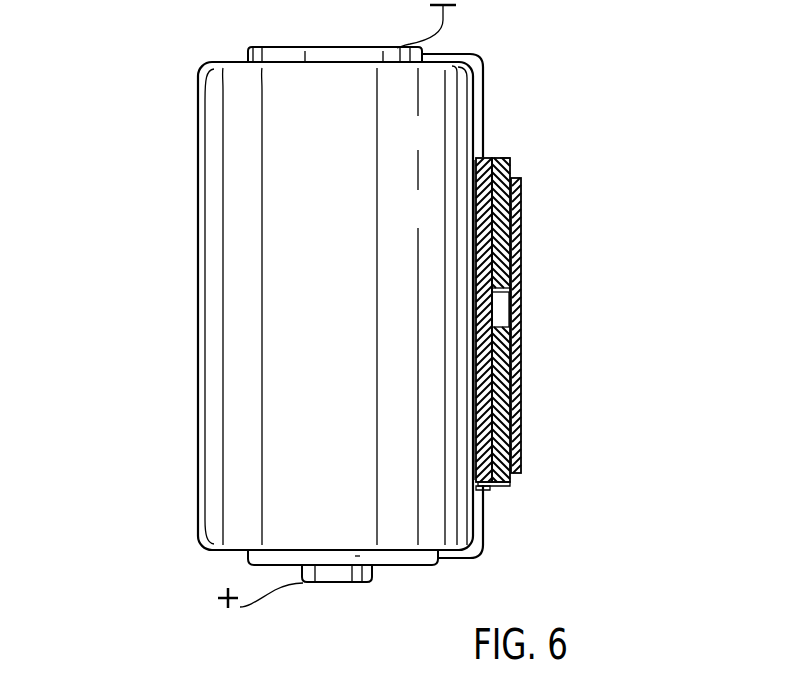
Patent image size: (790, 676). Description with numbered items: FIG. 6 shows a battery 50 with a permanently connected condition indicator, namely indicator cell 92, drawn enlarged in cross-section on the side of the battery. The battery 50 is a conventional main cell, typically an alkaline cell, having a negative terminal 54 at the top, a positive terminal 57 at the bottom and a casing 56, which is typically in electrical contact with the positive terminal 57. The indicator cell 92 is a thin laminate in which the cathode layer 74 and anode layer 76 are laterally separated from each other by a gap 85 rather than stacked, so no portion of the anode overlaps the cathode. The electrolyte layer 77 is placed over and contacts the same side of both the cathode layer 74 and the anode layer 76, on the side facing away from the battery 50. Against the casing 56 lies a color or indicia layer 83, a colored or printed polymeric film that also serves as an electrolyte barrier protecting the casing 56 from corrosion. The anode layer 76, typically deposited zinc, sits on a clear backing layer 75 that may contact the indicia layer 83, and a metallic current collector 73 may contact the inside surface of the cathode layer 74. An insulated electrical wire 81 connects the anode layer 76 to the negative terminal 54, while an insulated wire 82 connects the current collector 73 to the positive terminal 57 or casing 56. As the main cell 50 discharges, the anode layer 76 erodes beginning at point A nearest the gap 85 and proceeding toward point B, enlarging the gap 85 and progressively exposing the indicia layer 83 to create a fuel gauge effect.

The battery 50 is at (198, 252).
The negative terminal 54 is at (275, 47).
The casing 56 is at (473, 134).
The positive terminal 57 is at (365, 583).
The current collector 73 is at (492, 488).
The cathode layer 74 is at (503, 479).
The backing layer 75 is at (490, 157).
The anode layer 76 is at (510, 167).
The electrolyte layer 77 is at (521, 218).
The insulated electrical wire 81 is at (486, 80).
The insulated wire 82 is at (480, 560).
The color or indicia layer 83 is at (480, 217).
The gap 85 is at (500, 318).
The indicator cell 92 is at (523, 273).
The point A is at (499, 291).
The point B is at (507, 155).